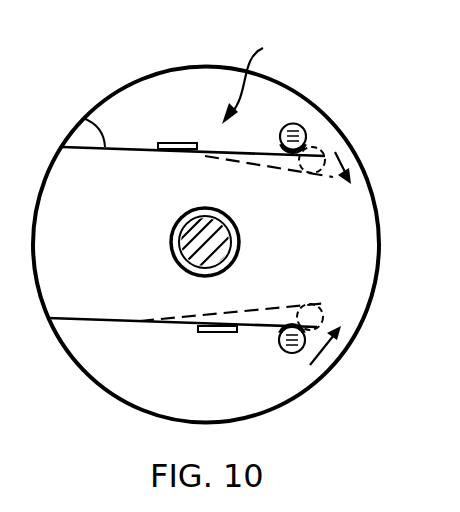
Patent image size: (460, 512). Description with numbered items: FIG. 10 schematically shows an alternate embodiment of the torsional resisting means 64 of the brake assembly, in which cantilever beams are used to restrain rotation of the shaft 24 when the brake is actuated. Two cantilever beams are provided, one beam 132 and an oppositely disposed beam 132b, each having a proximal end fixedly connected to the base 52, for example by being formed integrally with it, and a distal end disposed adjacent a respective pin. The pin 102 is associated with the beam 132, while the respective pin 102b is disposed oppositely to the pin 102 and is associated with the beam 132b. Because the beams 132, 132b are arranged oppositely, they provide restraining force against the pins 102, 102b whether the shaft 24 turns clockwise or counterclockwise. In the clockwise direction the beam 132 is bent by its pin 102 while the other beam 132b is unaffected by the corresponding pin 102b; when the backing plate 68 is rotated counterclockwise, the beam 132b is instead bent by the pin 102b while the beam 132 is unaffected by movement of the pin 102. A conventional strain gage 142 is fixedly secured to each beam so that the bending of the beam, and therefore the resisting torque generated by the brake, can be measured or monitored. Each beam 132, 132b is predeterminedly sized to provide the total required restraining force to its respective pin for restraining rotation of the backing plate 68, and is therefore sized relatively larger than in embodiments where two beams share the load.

The base 52 is at (150, 73).
The shaft 24 is at (225, 222).
The torsional resisting means 64 is at (286, 198).
The backing plate 68 is at (203, 399).
The pin 102 is at (287, 352).
The pin 102b is at (297, 123).
The cantilever beam 132 is at (102, 322).
The cantilever beam 132b is at (83, 118).
The strain gage 142 is at (183, 143).